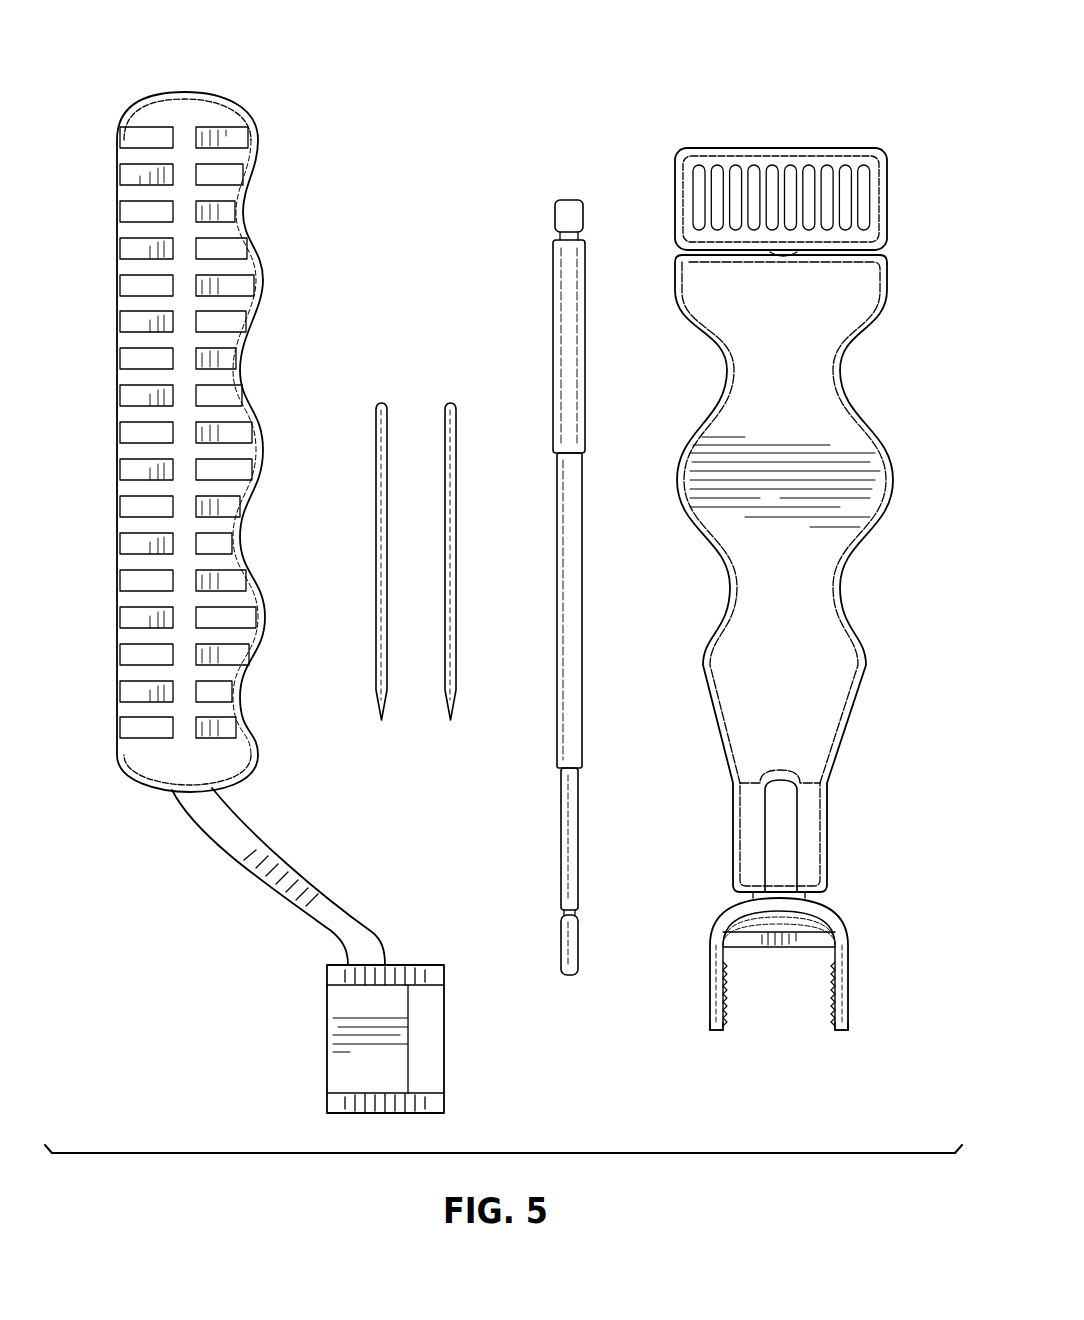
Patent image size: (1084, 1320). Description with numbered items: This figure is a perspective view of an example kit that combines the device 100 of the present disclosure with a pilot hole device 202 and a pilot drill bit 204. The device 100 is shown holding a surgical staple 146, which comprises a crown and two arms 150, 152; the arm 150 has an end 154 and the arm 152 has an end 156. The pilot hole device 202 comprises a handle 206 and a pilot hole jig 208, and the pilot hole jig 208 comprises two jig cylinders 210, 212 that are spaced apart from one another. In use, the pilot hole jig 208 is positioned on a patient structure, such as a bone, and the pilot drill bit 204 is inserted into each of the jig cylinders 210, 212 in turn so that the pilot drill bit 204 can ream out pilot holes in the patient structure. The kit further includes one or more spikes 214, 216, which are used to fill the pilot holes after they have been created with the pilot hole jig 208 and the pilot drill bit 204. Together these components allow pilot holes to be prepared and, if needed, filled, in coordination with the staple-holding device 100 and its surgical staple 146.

The device 100 is at (851, 67).
The surgical staple 146 is at (844, 901).
The arm 150 is at (708, 973).
The arm 152 is at (850, 943).
The end 154 is at (713, 1033).
The end 156 is at (844, 1033).
The pilot hole device 202 is at (238, 70).
The pilot drill bit 204 is at (568, 200).
The handle 206 is at (238, 207).
The pilot hole jig 208 is at (326, 1055).
The jig cylinder 210 is at (444, 1093).
The jig cylinder 212 is at (444, 965).
The spike 214 is at (380, 402).
The spike 216 is at (450, 402).